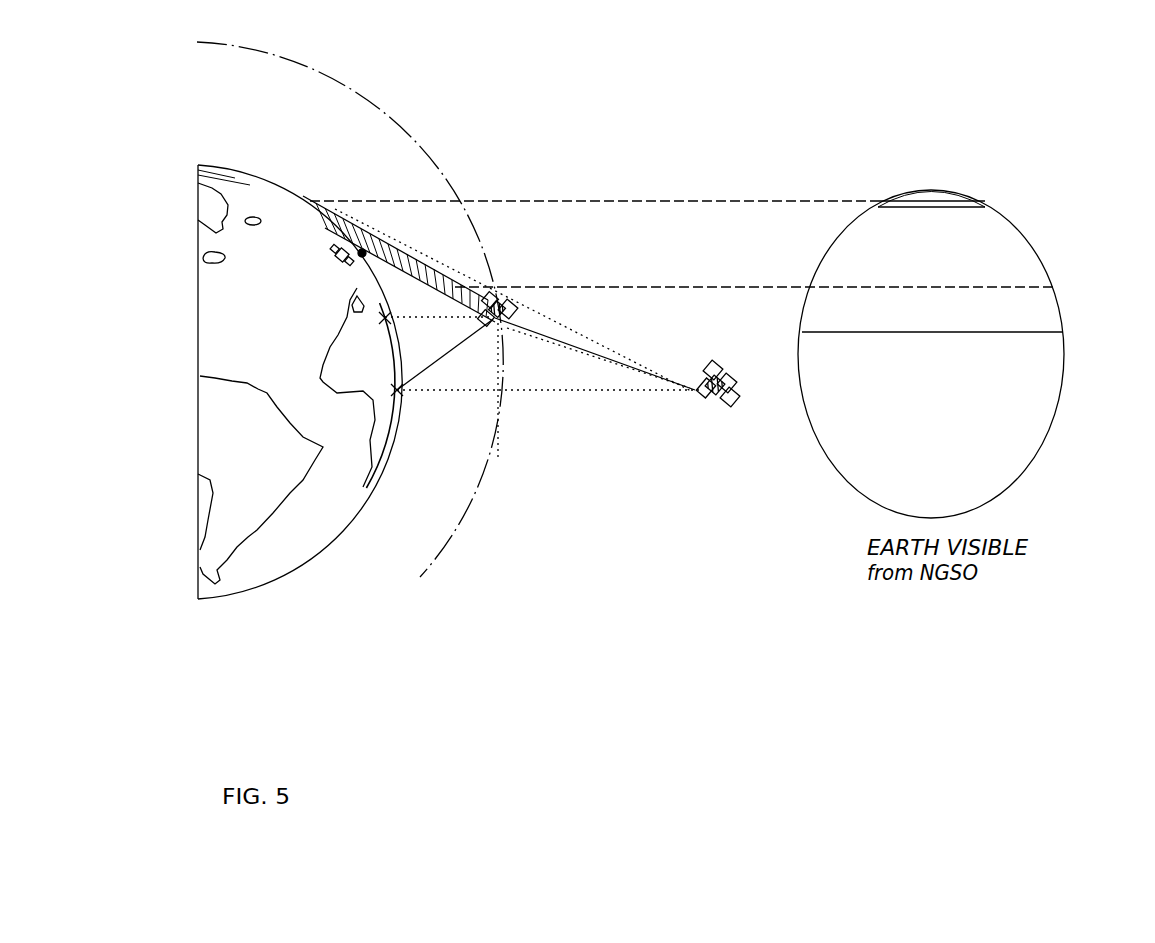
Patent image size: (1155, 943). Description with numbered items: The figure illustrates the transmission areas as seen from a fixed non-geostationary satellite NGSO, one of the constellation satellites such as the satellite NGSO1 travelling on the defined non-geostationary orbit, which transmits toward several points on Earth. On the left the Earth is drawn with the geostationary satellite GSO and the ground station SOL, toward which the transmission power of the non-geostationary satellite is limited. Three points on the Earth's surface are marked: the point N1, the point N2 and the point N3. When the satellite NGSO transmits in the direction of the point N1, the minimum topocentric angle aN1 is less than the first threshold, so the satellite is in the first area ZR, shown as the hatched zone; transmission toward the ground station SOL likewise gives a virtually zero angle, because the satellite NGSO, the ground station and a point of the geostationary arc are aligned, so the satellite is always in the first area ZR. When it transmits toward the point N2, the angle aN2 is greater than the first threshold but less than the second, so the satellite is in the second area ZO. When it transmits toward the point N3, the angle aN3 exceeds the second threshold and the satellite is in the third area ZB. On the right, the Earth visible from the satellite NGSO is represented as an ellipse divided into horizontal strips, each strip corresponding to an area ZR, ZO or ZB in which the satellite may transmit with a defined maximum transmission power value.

The first point on Earth N1 is at (591, 239).
The second point on Earth N2 is at (434, 309).
The third point on Earth N3 is at (545, 370).
The first area ZR is at (436, 280).
The second area ZO is at (400, 322).
The third area ZB is at (488, 454).
The geostationary satellite GSO is at (716, 403).
The ground station SOL is at (348, 303).
The non-geostationary satellite NGSO is at (512, 325).
The first non-geostationary satellite NGSO1 is at (450, 429).
The minimum topocentric angle toward point N1 aN1 is at (366, 238).
The minimum topocentric angle toward point N2 aN2 is at (442, 330).
The minimum topocentric angle toward point N3 aN3 is at (435, 378).